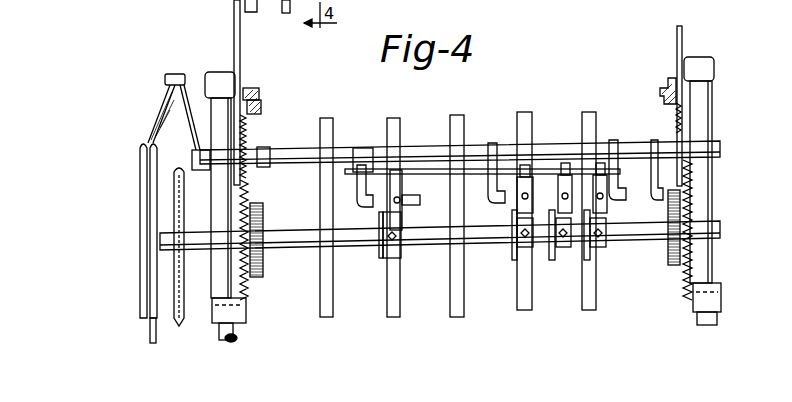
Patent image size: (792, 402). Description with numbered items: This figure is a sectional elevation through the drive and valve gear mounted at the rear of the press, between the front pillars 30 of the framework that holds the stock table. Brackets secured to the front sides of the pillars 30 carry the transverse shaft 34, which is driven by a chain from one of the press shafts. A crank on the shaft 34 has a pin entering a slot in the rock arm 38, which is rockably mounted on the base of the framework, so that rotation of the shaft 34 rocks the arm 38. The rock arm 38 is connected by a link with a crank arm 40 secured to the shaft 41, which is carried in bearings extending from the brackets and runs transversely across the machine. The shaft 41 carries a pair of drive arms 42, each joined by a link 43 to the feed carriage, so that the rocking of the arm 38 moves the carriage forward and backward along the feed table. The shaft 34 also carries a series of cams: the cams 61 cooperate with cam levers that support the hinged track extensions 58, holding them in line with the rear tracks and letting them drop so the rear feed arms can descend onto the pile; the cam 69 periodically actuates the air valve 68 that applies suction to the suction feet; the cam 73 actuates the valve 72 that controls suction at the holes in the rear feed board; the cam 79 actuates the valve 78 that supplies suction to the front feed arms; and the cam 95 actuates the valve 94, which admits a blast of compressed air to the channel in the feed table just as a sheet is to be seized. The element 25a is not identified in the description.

The foot 25a is at (238, 334).
The front pillar 30 is at (215, 126).
The transverse shaft 34 is at (285, 233).
The rock arm 38 is at (149, 333).
The crank arm 40 is at (183, 95).
The shaft 41 is at (362, 148).
The drive arm 42 is at (234, 38).
The link 43 is at (252, 12).
The track extension 58 is at (260, 100).
The cam 61 is at (263, 262).
The air valve 68 is at (523, 197).
The cam 69 is at (515, 216).
The valve 72 is at (550, 185).
The cam 73 is at (556, 250).
The valve 78 is at (583, 183).
The cam 79 is at (590, 254).
The valve 94 is at (402, 190).
The cam 95 is at (383, 222).